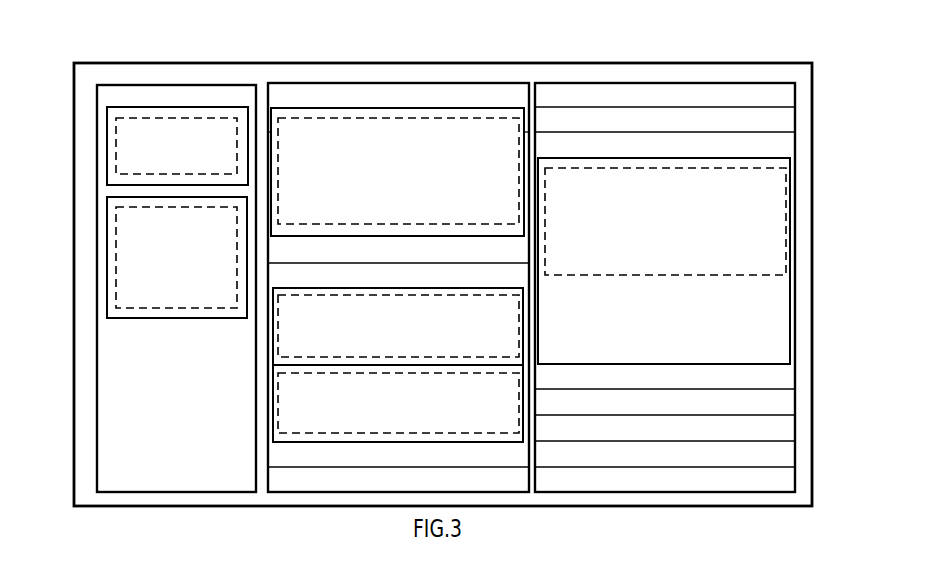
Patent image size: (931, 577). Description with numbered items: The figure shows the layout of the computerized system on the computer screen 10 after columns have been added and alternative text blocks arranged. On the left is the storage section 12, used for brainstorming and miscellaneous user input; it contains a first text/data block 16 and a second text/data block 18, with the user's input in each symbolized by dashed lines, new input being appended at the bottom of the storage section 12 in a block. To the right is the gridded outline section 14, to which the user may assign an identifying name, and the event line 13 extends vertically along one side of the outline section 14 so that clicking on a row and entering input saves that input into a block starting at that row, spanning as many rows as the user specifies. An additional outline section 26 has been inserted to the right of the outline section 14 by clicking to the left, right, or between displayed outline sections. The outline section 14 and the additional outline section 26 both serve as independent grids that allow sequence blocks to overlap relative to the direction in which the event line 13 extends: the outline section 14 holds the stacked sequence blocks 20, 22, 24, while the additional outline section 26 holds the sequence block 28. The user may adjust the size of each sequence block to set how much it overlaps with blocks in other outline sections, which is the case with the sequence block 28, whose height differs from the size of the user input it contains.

The computer screen 10 is at (73, 372).
The storage section 12 is at (103, 458).
The event line 13 is at (268, 247).
The outline section 14 is at (470, 83).
The first text/data block 16 is at (108, 122).
The second text/data block 18 is at (103, 292).
The sequence block 20 is at (428, 108).
The sequence block 22 is at (268, 340).
The sequence block 24 is at (270, 428).
The additional outline section 26 is at (795, 143).
The sequence block 28 is at (792, 295).